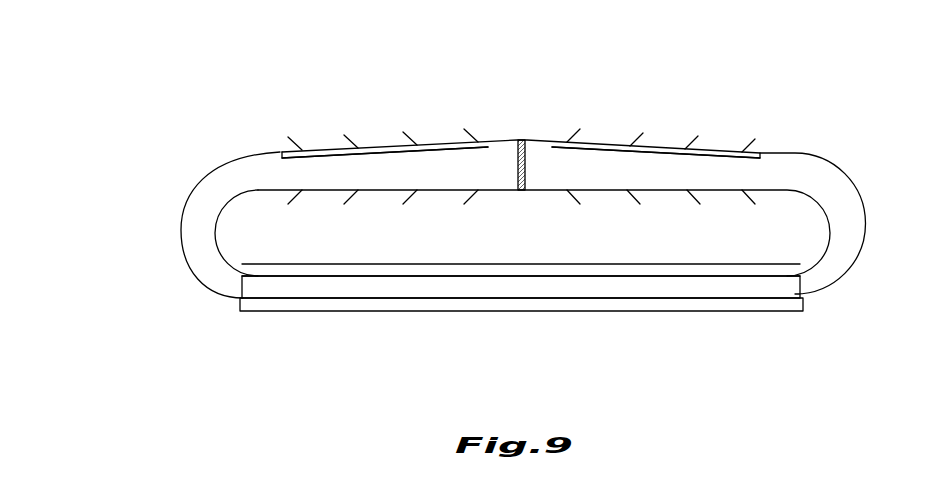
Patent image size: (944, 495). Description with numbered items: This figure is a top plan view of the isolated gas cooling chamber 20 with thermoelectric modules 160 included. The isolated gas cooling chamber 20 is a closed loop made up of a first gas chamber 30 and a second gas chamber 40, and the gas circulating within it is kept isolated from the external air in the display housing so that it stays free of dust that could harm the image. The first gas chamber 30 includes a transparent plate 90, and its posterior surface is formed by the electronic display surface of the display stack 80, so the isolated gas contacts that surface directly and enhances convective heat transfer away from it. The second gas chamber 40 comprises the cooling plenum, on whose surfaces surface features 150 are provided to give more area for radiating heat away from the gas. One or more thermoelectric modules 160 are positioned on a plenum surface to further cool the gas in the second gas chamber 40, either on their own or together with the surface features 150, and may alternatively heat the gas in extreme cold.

The isolated gas cooling chamber 20 is at (163, 202).
The first gas chamber 30 is at (422, 288).
The second gas chamber 40 is at (532, 201).
The display stack 80 is at (517, 276).
The transparent plate 90 is at (642, 310).
The surface features 150 is at (470, 137).
The thermoelectric modules 160 is at (607, 150).